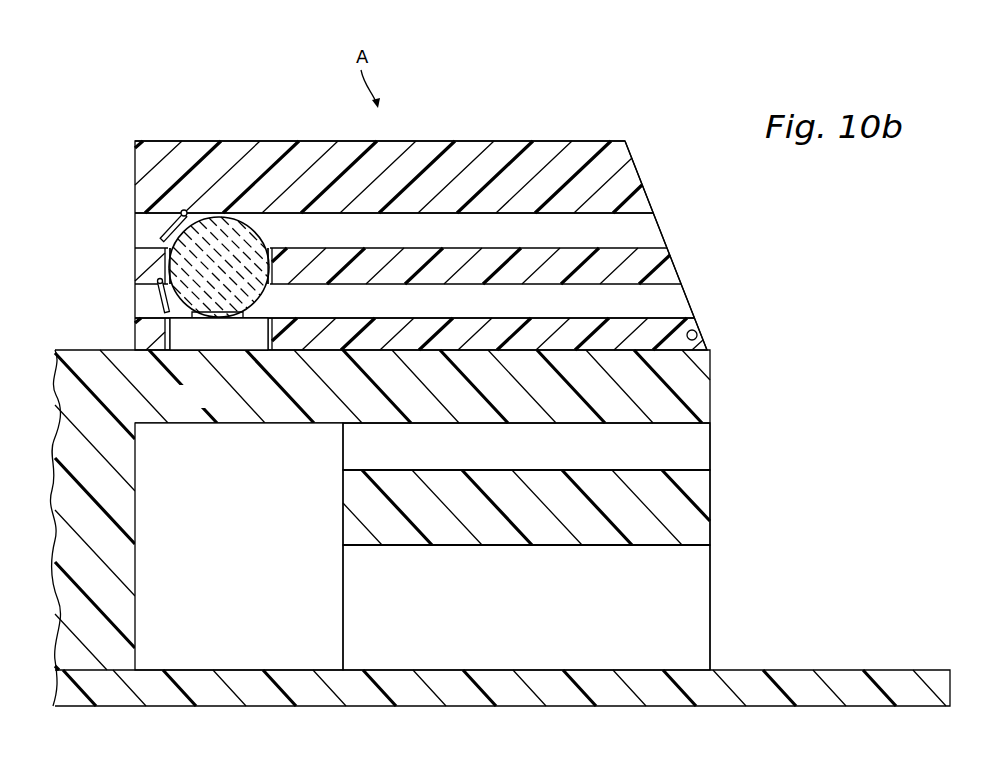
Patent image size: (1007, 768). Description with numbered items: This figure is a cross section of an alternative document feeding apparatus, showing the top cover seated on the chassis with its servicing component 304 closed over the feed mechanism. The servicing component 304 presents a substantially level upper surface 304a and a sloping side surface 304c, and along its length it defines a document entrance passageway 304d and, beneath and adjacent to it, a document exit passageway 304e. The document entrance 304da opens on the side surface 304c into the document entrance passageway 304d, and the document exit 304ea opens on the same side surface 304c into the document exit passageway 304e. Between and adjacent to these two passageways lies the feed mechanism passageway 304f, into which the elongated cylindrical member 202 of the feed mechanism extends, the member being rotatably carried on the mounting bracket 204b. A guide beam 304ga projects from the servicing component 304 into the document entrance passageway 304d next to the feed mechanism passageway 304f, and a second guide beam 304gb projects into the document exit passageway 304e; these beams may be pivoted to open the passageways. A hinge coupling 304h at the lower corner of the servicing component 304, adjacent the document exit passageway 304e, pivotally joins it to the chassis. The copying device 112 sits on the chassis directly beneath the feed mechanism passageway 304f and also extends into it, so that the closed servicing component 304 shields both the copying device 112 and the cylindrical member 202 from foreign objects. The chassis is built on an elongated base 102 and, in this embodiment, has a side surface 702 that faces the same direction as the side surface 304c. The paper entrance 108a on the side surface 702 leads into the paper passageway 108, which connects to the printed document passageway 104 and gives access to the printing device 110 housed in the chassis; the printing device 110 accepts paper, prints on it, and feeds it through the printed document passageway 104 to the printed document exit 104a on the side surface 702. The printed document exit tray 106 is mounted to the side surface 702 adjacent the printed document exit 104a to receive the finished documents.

The servicing component 304 is at (237, 135).
The upper surface 304a is at (317, 141).
The side surface 304c is at (637, 171).
The document entrance passageway 304d is at (664, 226).
The document entrance 304da is at (655, 248).
The document exit passageway 304e is at (691, 295).
The document exit 304ea is at (703, 329).
The feed mechanism passageway 304f is at (266, 248).
The guide beam 304ga is at (160, 238).
The guide beam 304gb is at (158, 305).
The hinge coupling 304h is at (689, 340).
The side surface 702 is at (712, 394).
The copying device 112 is at (207, 344).
The printing device 110 is at (258, 598).
The paper entrance 108a is at (712, 436).
The paper passageway 108 is at (716, 460).
The elongated base 102 is at (718, 495).
The printed document exit 104a is at (666, 546).
The printed document passageway 104 is at (538, 627).
The printed document exit tray 106 is at (876, 671).
The elongated cylindrical member 202 is at (236, 281).
The mounting bracket 204b is at (245, 314).